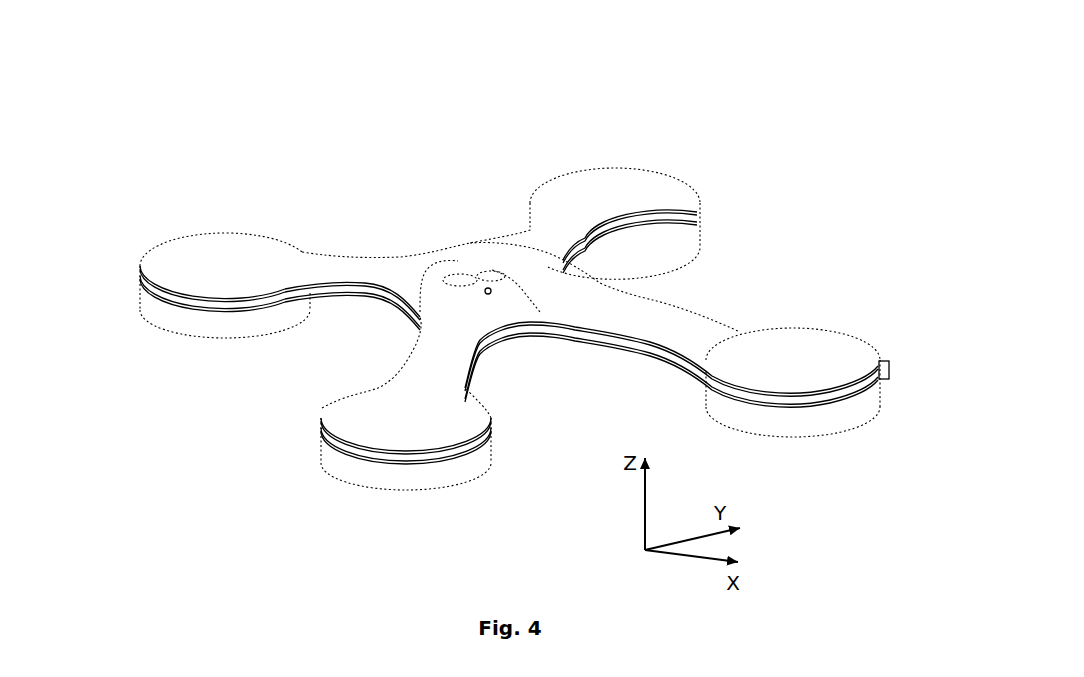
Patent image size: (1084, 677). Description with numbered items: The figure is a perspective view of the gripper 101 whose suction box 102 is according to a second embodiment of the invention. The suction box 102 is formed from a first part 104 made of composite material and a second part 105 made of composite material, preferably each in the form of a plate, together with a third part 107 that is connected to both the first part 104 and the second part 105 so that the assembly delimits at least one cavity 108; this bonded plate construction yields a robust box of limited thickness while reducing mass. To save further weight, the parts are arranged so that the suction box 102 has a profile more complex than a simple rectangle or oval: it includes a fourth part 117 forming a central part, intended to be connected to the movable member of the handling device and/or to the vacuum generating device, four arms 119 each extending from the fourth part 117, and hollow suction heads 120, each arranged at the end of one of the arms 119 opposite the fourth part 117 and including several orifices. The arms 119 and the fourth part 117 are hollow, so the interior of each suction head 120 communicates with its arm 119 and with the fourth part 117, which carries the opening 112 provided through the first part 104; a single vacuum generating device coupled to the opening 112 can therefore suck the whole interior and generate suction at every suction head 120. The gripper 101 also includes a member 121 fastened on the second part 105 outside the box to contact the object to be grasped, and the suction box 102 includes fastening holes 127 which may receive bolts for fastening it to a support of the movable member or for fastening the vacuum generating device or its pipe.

The gripper 101 is at (779, 166).
The suction box 102 is at (890, 370).
The first part 104 is at (720, 348).
The second part 105 is at (335, 293).
The third part 107 is at (190, 293).
The cavity 108 is at (494, 278).
The opening 112 is at (517, 282).
The fourth part 117 is at (512, 316).
The arms 119 is at (628, 320).
The suction heads 120 is at (810, 345).
The member 121 is at (207, 325).
The fastening holes 127 is at (420, 272).